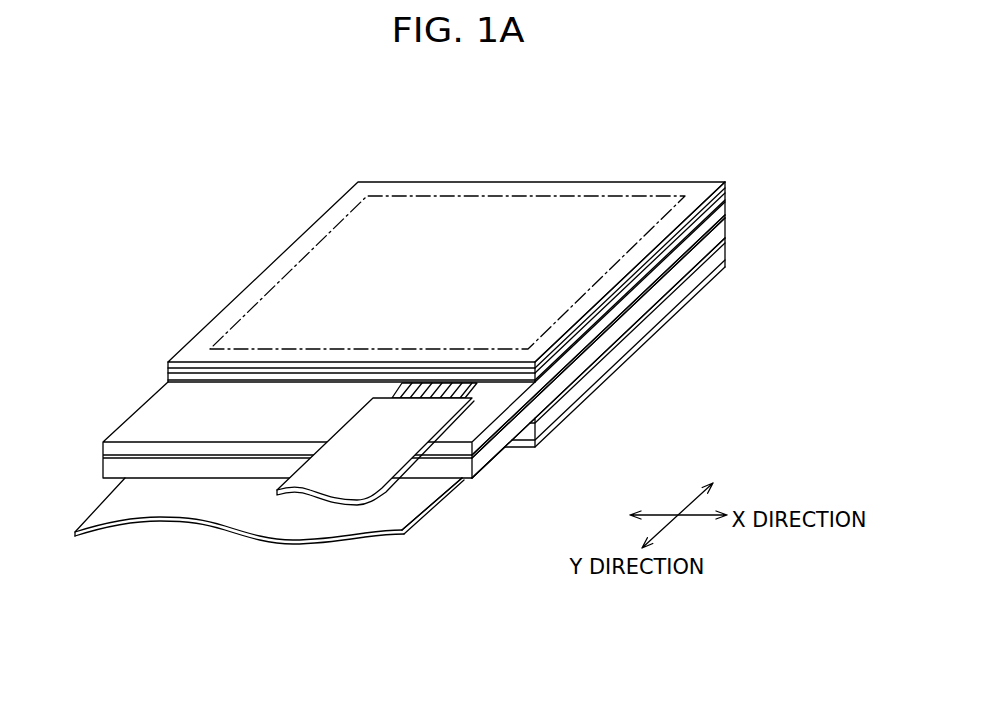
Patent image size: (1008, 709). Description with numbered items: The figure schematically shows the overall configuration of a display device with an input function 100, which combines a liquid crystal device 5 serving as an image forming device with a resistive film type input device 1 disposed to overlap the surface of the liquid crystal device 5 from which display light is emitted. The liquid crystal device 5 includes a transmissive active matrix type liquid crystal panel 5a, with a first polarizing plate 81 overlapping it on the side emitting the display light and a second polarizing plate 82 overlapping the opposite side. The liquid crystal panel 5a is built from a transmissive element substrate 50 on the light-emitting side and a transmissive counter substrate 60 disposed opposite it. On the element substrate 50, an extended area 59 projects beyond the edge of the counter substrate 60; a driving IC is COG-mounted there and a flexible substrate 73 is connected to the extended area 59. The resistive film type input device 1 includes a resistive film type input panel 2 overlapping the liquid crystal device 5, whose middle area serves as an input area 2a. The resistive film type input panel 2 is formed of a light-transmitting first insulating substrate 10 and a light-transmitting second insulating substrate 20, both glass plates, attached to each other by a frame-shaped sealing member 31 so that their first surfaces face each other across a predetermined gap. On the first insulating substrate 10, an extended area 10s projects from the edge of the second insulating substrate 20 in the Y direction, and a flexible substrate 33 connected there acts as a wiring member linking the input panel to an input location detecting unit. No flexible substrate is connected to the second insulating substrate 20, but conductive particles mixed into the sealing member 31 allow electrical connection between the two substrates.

The display device with an input function 100 is at (295, 150).
The resistive film type input device 1 is at (438, 175).
The resistive film type input panel 2 is at (600, 124).
The input area 2a is at (490, 195).
The first insulating substrate 10 is at (414, 407).
The second insulating substrate 20 is at (658, 270).
The sealing member 31 is at (712, 197).
The liquid crystal device 5 is at (827, 175).
The liquid crystal panel 5a is at (780, 207).
The first polarizing plate 81 is at (712, 228).
The element substrate 50 is at (703, 247).
The counter substrate 60 is at (693, 280).
The second polarizing plate 82 is at (680, 303).
The extended area 10s is at (267, 425).
The flexible substrate 73 is at (310, 523).
The flexible substrate 33 is at (373, 470).
The extended area 59 is at (460, 482).